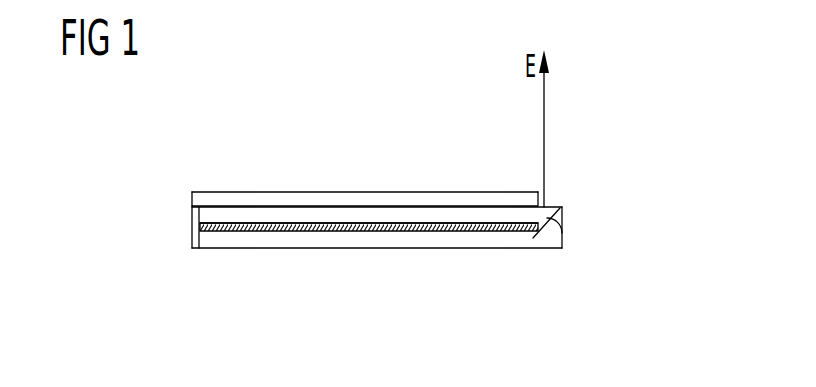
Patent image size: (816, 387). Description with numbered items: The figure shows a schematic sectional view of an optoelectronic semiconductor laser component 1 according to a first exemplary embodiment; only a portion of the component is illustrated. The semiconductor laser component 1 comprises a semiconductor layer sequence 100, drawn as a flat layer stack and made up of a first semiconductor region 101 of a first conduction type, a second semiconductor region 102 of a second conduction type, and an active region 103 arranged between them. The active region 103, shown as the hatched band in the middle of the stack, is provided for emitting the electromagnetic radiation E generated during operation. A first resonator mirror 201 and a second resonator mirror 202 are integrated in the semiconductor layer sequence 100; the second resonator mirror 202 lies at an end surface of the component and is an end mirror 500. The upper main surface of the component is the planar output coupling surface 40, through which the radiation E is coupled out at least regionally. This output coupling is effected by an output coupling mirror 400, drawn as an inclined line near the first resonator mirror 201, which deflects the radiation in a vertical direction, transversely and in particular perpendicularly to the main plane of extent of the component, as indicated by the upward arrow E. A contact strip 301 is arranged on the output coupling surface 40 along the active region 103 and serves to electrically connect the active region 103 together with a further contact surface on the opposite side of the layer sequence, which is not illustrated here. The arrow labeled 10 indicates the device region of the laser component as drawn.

The optoelectronic semiconductor laser component 1 is at (612, 92).
The optical device 10 is at (353, 183).
The output coupling surface 40 is at (457, 200).
The contact strip 301 is at (230, 203).
The semiconductor layer sequence 100 is at (443, 317).
The first semiconductor region 101 is at (418, 240).
The second semiconductor region 102 is at (316, 215).
The active region 103 is at (368, 232).
The first resonator mirror 201 is at (563, 233).
The second resonator mirror 202 is at (129, 227).
The end mirror 500 is at (192, 223).
The output coupling mirror 400 is at (557, 201).